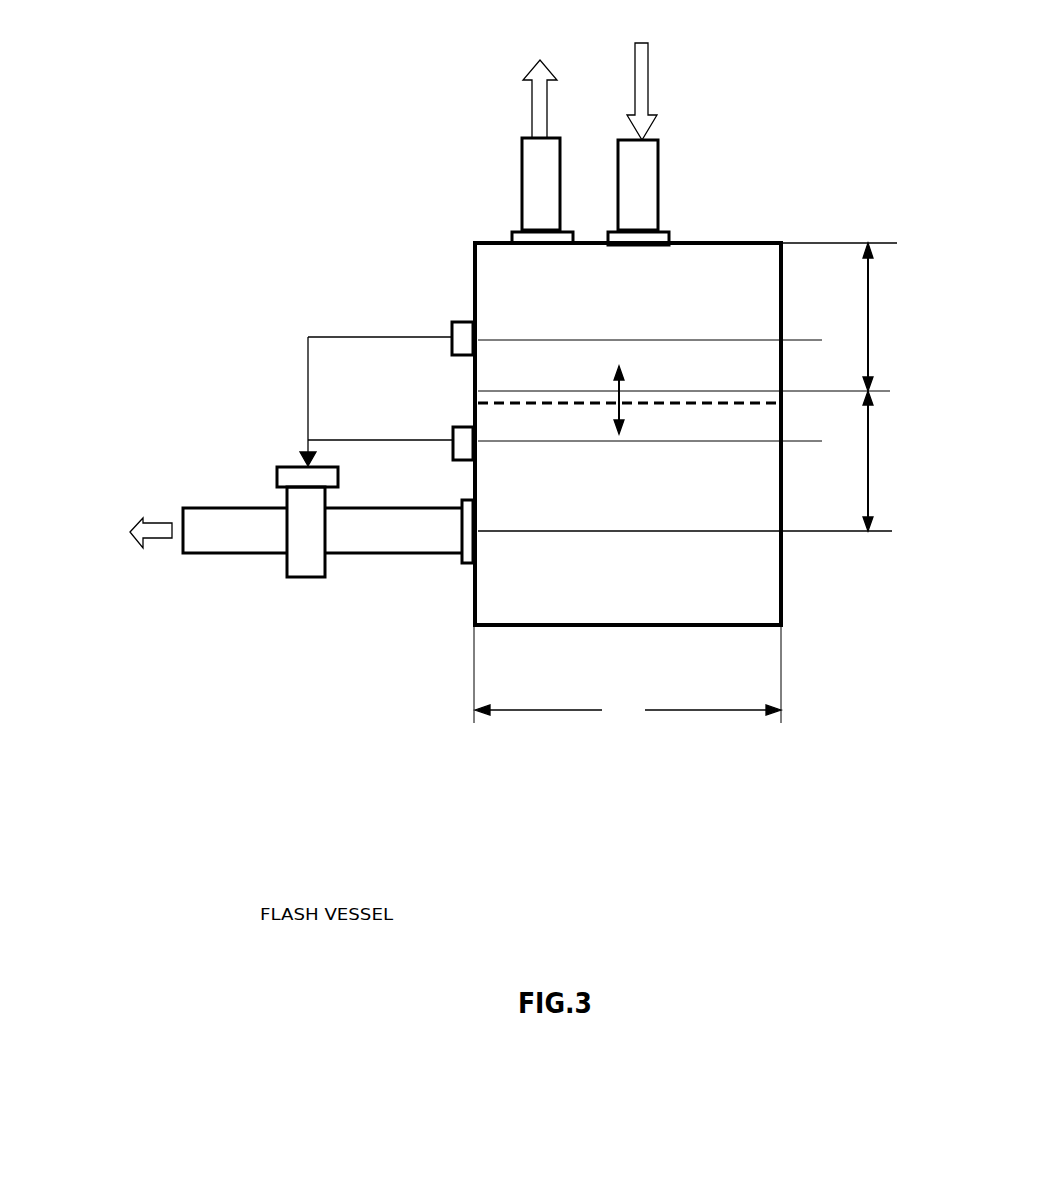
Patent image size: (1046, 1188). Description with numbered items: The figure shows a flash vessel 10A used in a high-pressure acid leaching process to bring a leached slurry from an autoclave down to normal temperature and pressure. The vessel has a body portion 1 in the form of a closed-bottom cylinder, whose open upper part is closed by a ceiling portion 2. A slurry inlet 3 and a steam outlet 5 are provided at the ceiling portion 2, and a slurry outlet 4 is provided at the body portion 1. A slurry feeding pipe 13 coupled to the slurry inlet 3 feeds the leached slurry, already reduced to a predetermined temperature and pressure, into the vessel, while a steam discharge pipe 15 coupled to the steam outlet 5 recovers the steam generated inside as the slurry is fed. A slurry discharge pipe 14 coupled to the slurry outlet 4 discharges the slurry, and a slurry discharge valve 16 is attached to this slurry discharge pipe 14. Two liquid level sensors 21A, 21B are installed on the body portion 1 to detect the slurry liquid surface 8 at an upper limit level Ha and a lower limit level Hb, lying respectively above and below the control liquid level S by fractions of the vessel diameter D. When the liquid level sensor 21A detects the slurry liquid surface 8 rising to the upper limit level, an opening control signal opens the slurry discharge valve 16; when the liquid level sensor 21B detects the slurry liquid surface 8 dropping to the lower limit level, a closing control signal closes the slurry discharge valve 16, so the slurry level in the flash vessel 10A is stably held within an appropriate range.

The body portion 1 is at (782, 590).
The ceiling portion 2 is at (760, 243).
The slurry inlet 3 is at (660, 230).
The slurry outlet 4 is at (460, 563).
The steam outlet 5 is at (512, 232).
The slurry liquid surface 8 is at (707, 406).
The slurry feeding pipe 13 is at (659, 160).
The slurry discharge pipe 14 is at (367, 549).
The steam discharge pipe 15 is at (522, 203).
The slurry discharge valve 16 is at (293, 518).
The liquid level sensor 21A is at (453, 322).
The liquid level sensor 21B is at (455, 427).
The flash vessel 10A is at (490, 451).